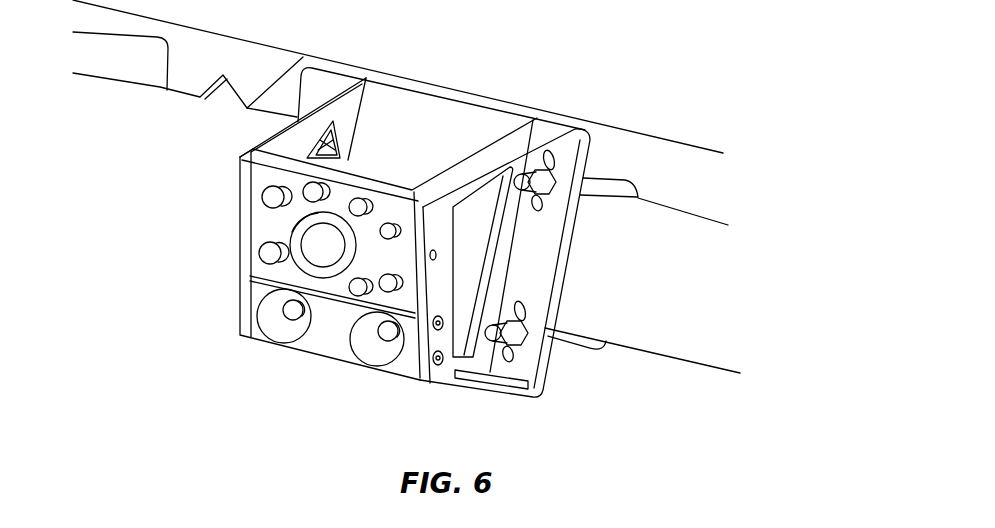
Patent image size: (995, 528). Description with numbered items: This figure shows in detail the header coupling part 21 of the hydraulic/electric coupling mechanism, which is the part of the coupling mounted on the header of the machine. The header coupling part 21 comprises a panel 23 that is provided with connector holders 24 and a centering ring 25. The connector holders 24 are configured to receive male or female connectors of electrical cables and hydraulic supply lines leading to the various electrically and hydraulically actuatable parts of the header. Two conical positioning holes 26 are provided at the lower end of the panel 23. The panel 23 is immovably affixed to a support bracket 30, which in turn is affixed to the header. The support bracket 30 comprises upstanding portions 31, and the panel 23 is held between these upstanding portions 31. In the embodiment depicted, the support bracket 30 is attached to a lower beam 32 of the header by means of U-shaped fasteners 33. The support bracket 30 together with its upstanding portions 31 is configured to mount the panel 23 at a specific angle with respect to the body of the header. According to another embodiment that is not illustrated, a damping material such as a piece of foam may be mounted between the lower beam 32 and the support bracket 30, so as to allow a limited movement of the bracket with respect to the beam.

The header coupling part 21 is at (443, 399).
The panel 23 is at (380, 198).
The connector holders 24 is at (270, 201).
The centering ring 25 is at (313, 260).
The conical positioning holes 26 is at (278, 330).
The support bracket 30 is at (447, 113).
The upstanding portions 31 is at (383, 104).
The lower beam 32 is at (663, 345).
The U-shaped fasteners 33 is at (602, 180).